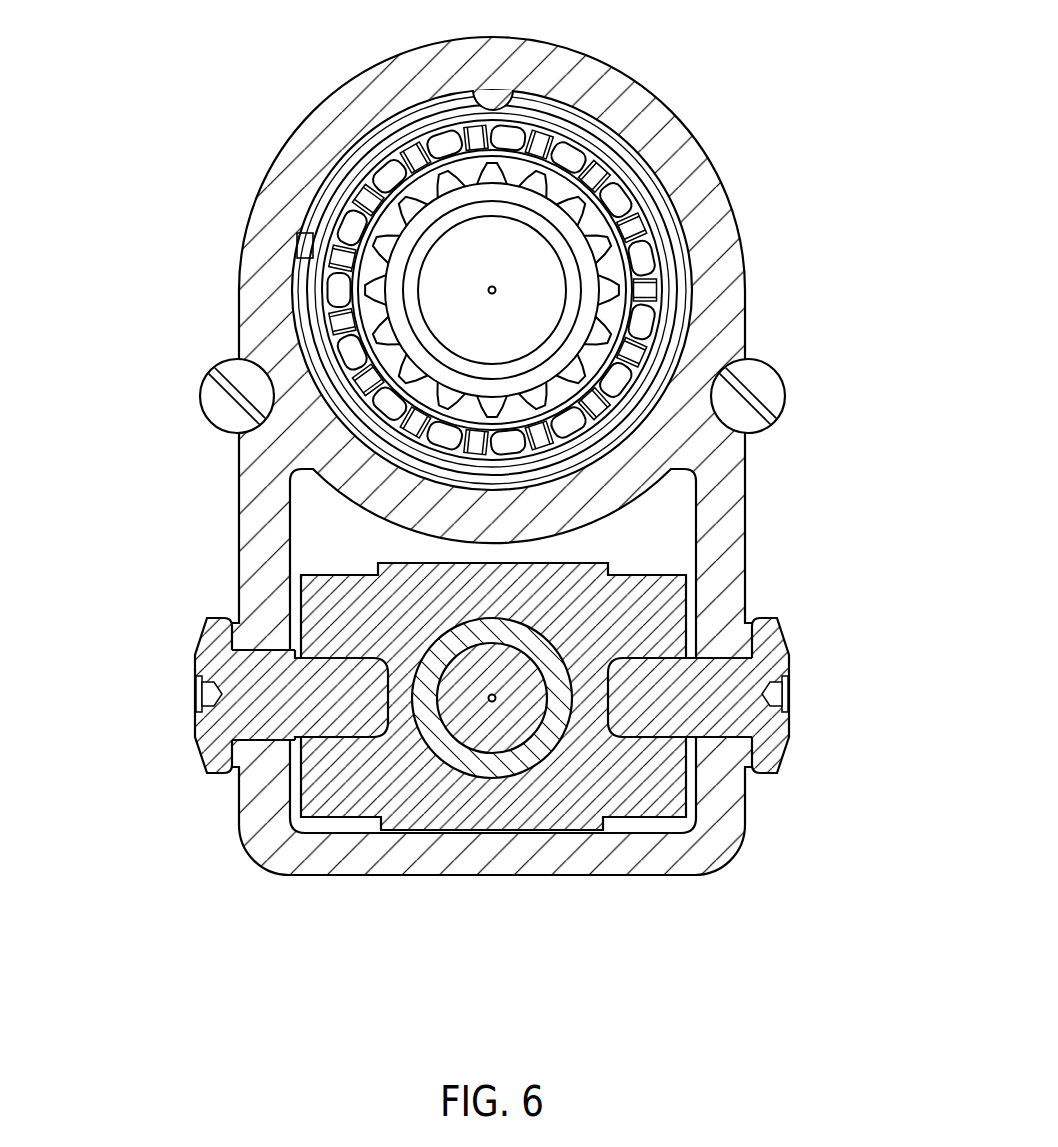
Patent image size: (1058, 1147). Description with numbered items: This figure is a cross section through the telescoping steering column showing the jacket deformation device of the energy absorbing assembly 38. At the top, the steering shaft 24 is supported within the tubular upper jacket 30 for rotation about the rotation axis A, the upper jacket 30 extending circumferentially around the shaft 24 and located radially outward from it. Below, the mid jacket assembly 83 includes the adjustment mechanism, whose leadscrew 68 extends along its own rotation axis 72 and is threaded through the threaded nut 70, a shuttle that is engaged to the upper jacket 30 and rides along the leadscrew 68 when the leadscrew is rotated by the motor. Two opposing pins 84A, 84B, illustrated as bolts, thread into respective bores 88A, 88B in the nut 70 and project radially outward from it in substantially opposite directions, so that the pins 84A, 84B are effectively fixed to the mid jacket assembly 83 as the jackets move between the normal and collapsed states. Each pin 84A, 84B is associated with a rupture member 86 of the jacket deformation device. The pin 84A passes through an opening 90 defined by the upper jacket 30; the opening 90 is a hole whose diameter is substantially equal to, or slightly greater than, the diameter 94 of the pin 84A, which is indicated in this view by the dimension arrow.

The upper jacket 30 is at (656, 103).
The rotation axis A is at (660, 218).
The steering shaft 24 is at (496, 290).
The mid jacket assembly 83 is at (545, 685).
The threaded nut 70 is at (348, 817).
The energy absorbing assembly 38 is at (514, 702).
The pin 84A is at (203, 632).
The pin 84B is at (807, 685).
The rupture member 86 is at (758, 733).
The bore 88A is at (300, 660).
The bore 88B is at (648, 660).
The opening 90 is at (250, 733).
The pin diameter 94 is at (200, 650).
The leadscrew 68 is at (611, 777).
The rotation axis 72 is at (492, 702).